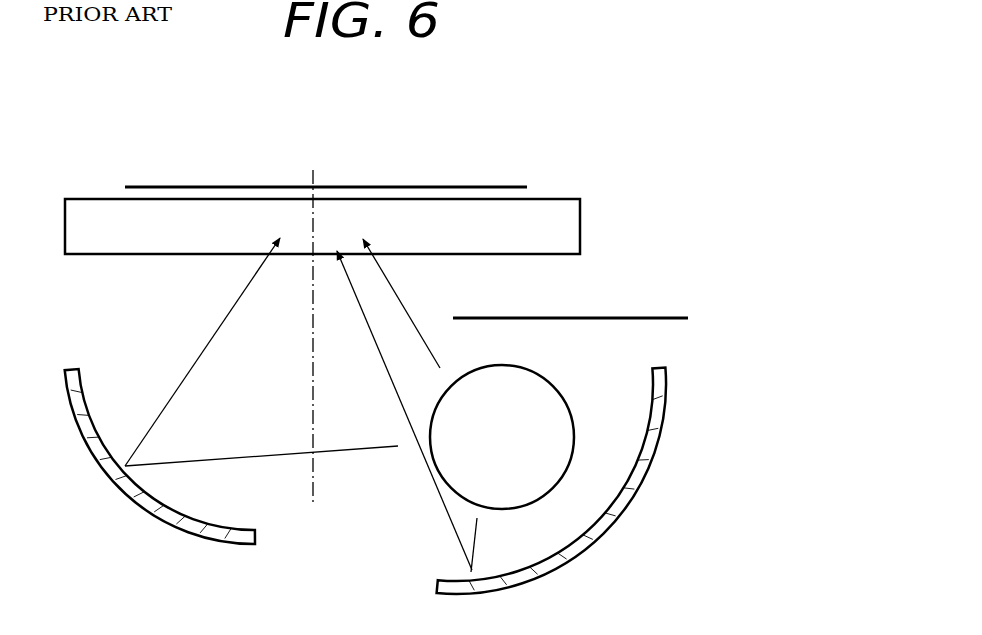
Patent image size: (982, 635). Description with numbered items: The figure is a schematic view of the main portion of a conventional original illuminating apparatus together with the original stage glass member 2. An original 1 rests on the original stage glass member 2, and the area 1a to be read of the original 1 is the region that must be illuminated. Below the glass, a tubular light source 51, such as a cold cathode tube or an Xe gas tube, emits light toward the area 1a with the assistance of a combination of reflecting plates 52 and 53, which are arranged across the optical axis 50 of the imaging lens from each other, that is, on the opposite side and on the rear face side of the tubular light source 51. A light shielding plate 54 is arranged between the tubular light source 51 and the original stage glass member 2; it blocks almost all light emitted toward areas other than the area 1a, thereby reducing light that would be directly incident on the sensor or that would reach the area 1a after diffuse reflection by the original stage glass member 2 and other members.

The original 1 is at (487, 188).
The area to be read 1a is at (315, 185).
The original stage glass member 2 is at (571, 219).
The optical axis 50 is at (313, 480).
The tubular light source 51 is at (558, 467).
The reflecting plate 52 is at (112, 465).
The reflecting plate 53 is at (640, 440).
The light shielding plate 54 is at (662, 319).